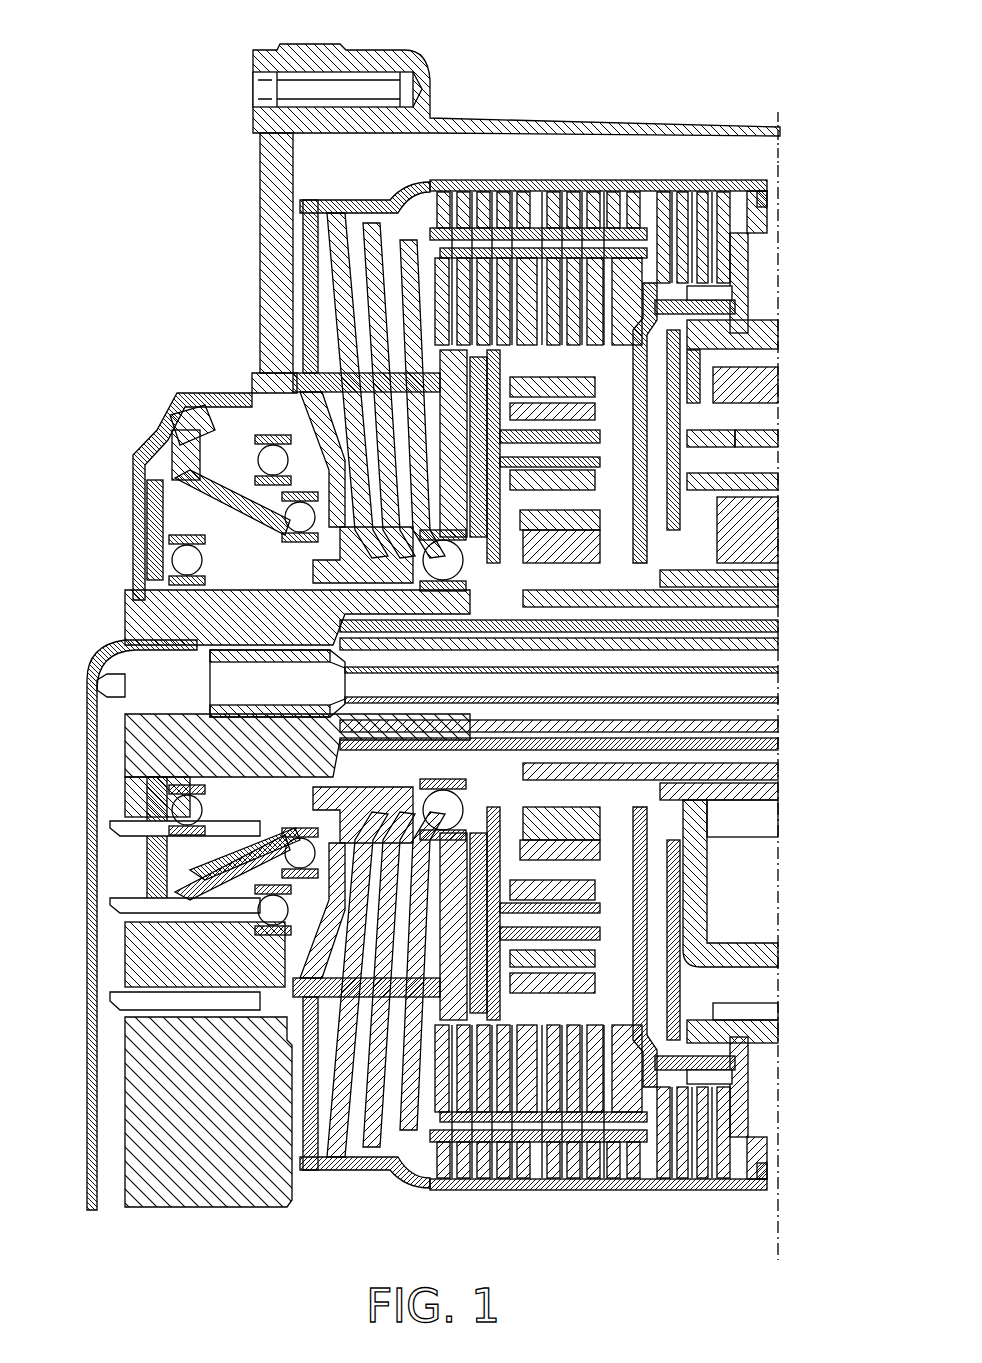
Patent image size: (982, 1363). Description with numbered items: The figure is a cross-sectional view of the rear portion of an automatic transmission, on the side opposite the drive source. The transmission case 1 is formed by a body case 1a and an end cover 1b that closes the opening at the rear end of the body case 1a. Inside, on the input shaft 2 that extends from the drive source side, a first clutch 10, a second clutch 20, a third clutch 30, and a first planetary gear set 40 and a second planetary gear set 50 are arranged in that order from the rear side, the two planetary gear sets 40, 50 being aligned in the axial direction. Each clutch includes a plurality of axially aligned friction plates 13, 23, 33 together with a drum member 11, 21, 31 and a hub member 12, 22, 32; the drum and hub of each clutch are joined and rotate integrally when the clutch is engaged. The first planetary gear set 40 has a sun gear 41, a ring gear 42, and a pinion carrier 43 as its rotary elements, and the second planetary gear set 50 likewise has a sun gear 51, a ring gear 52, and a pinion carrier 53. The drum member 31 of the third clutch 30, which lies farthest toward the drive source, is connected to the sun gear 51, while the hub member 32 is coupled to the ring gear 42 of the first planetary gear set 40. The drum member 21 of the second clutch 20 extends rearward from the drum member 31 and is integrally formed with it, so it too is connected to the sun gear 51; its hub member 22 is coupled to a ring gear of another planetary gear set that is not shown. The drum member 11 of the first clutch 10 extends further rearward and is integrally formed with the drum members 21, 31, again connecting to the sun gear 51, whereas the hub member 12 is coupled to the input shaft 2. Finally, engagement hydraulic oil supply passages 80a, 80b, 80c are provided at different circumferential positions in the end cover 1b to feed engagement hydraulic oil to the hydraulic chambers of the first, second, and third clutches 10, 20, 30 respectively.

The transmission case 1 is at (585, 77).
The body case 1a is at (432, 75).
The end cover 1b is at (262, 190).
The input shaft 2 is at (768, 598).
The first clutch 10 is at (492, 172).
The drum member 11 is at (428, 183).
The hub member 12 is at (440, 358).
The friction plates 13 is at (435, 187).
The second clutch 20 is at (620, 175).
The drum member 21 is at (550, 192).
The hub member 22 is at (717, 293).
The friction plates 23 is at (573, 192).
The third clutch 30 is at (750, 175).
The drum member 31 is at (666, 192).
The hub member 32 is at (717, 292).
The friction plates 33 is at (700, 192).
The first planetary gear set 40 is at (522, 668).
The sun gear 41 is at (550, 500).
The ring gear 42 is at (674, 342).
The pinion carrier 43 is at (700, 447).
The second planetary gear set 50 is at (785, 395).
The sun gear 51 is at (774, 566).
The ring gear 52 is at (770, 357).
The pinion carrier 53 is at (760, 440).
The engagement hydraulic oil supply passage 80a is at (115, 832).
The engagement hydraulic oil supply passage 80b is at (115, 910).
The engagement hydraulic oil supply passage 80c is at (115, 1005).